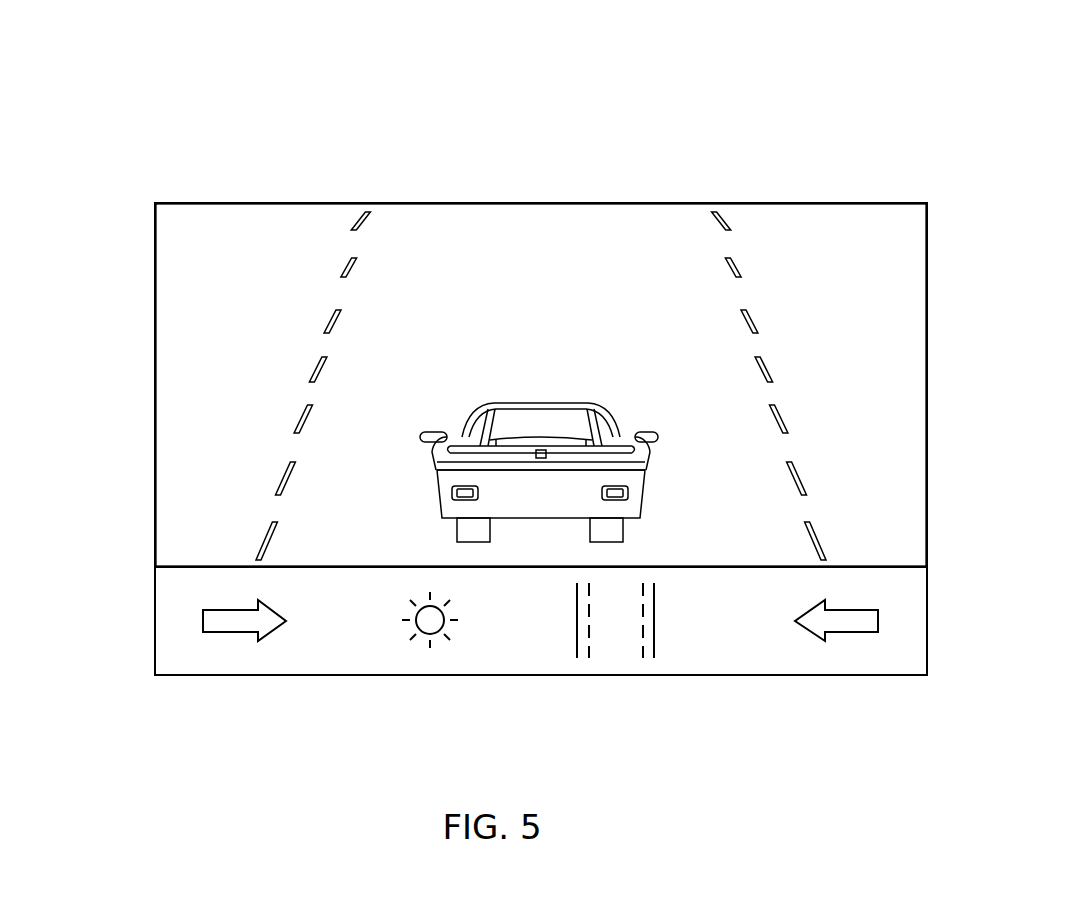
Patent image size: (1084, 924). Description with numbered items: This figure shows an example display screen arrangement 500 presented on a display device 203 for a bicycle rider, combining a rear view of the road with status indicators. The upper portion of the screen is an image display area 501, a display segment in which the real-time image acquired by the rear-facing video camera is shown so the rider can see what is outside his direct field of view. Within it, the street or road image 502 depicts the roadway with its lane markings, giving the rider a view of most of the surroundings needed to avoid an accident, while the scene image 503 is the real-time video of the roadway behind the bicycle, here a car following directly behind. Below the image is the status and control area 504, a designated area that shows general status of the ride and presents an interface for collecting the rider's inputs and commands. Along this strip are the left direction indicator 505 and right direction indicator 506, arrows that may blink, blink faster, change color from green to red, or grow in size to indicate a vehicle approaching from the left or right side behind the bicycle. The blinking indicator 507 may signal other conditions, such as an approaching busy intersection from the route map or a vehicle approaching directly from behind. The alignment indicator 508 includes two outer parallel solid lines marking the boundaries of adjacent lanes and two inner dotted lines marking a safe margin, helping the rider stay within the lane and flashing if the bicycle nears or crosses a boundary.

The display screen arrangement 500 is at (828, 72).
The display device 203 is at (259, 203).
The image display area 501 is at (193, 270).
The street or road image 502 is at (382, 357).
The scene image 503 is at (548, 405).
The status and control area 504 is at (188, 650).
The left direction indicator 505 is at (238, 620).
The right direction indicator 506 is at (852, 620).
The blinking indicator 507 is at (430, 628).
The alignment indicator 508 is at (620, 643).